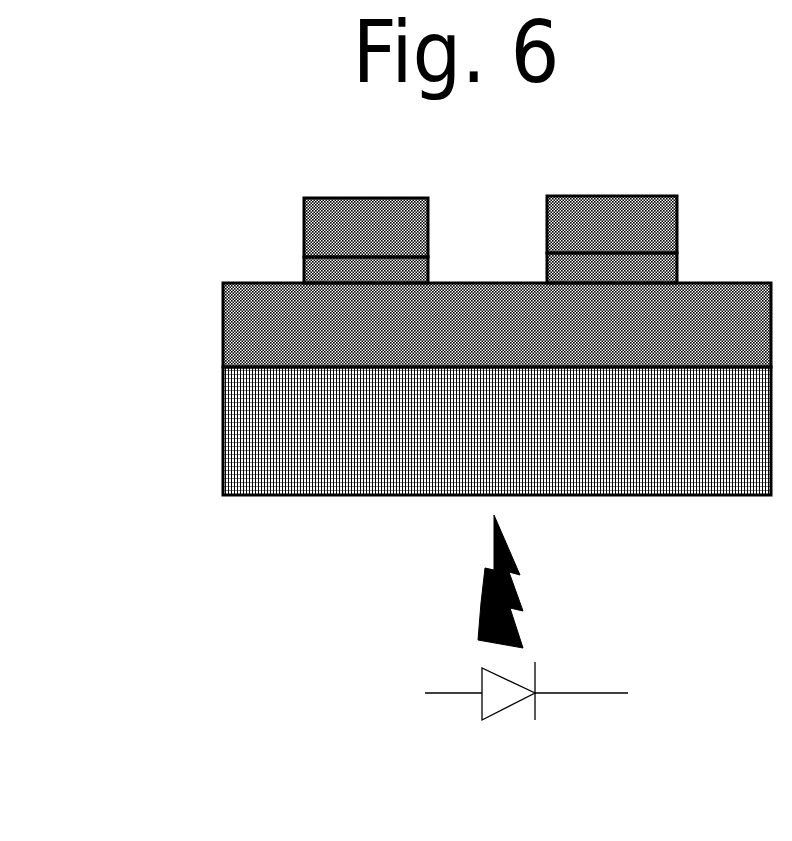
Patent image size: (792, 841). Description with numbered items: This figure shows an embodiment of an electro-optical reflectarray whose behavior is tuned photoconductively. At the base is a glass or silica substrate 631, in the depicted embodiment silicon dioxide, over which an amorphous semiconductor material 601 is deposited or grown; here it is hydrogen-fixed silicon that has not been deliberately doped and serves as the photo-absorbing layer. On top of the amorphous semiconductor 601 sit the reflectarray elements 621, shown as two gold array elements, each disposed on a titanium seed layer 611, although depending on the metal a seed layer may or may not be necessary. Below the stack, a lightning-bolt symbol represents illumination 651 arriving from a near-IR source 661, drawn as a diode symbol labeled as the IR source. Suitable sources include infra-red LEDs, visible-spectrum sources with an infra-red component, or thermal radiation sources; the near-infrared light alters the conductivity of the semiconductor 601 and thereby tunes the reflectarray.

The amorphous semiconductor material 601 is at (410, 325).
The seed layer 611 is at (363, 262).
The reflectarray elements 621 is at (369, 210).
The substrate 631 is at (422, 452).
The illumination 651 is at (362, 584).
The near-IR source 661 is at (409, 715).